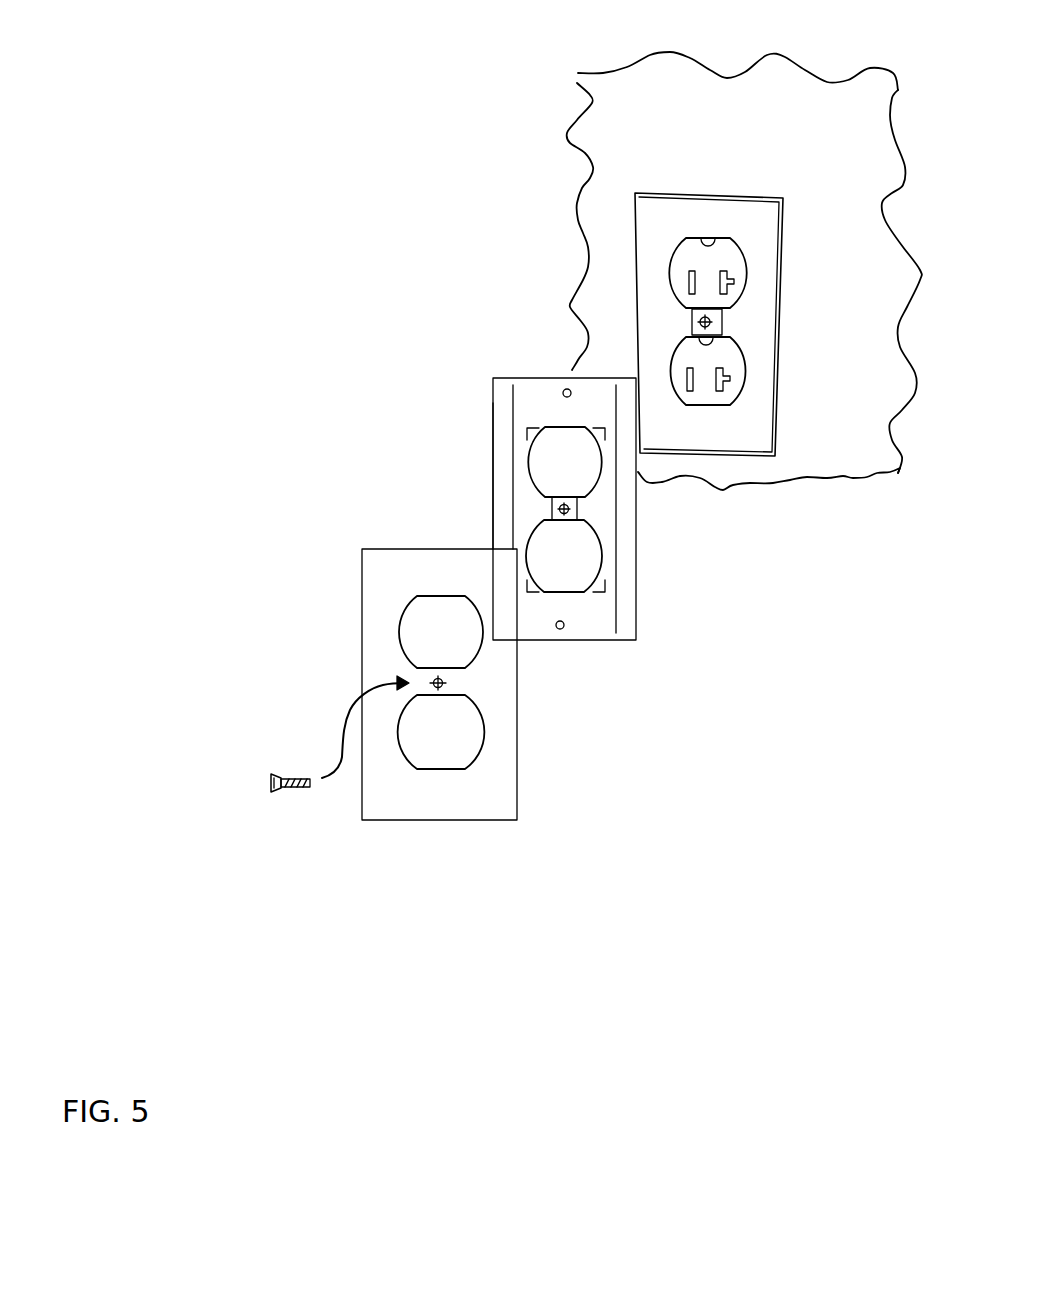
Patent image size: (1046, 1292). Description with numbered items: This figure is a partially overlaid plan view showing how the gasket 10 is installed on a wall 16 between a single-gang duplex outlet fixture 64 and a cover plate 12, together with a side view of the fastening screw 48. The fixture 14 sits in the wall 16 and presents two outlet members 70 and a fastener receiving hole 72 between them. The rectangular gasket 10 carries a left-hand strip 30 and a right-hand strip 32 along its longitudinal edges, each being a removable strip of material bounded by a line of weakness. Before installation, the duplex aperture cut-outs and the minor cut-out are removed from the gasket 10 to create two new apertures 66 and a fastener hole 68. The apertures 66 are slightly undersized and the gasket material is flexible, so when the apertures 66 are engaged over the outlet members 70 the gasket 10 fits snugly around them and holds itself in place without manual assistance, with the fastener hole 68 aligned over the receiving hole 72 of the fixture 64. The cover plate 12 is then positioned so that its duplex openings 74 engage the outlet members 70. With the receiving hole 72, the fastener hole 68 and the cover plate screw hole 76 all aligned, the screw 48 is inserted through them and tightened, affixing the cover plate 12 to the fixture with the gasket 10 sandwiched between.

The gasket 10 is at (494, 403).
The cover plate 12 is at (372, 608).
The duplex receptacle 14 is at (634, 222).
The wall 16 is at (597, 134).
The left-hand strip 30 is at (495, 527).
The right-hand strip 32 is at (628, 608).
The screw 48 is at (270, 783).
The duplex outlet fixture 64 is at (666, 269).
The apertures 66 is at (540, 543).
The fastener hole 68 is at (568, 512).
The outlet members 70 is at (742, 290).
The fastener receiving hole 72 is at (700, 321).
The duplex openings 74 is at (453, 643).
The cover plate screw hole 76 is at (432, 681).